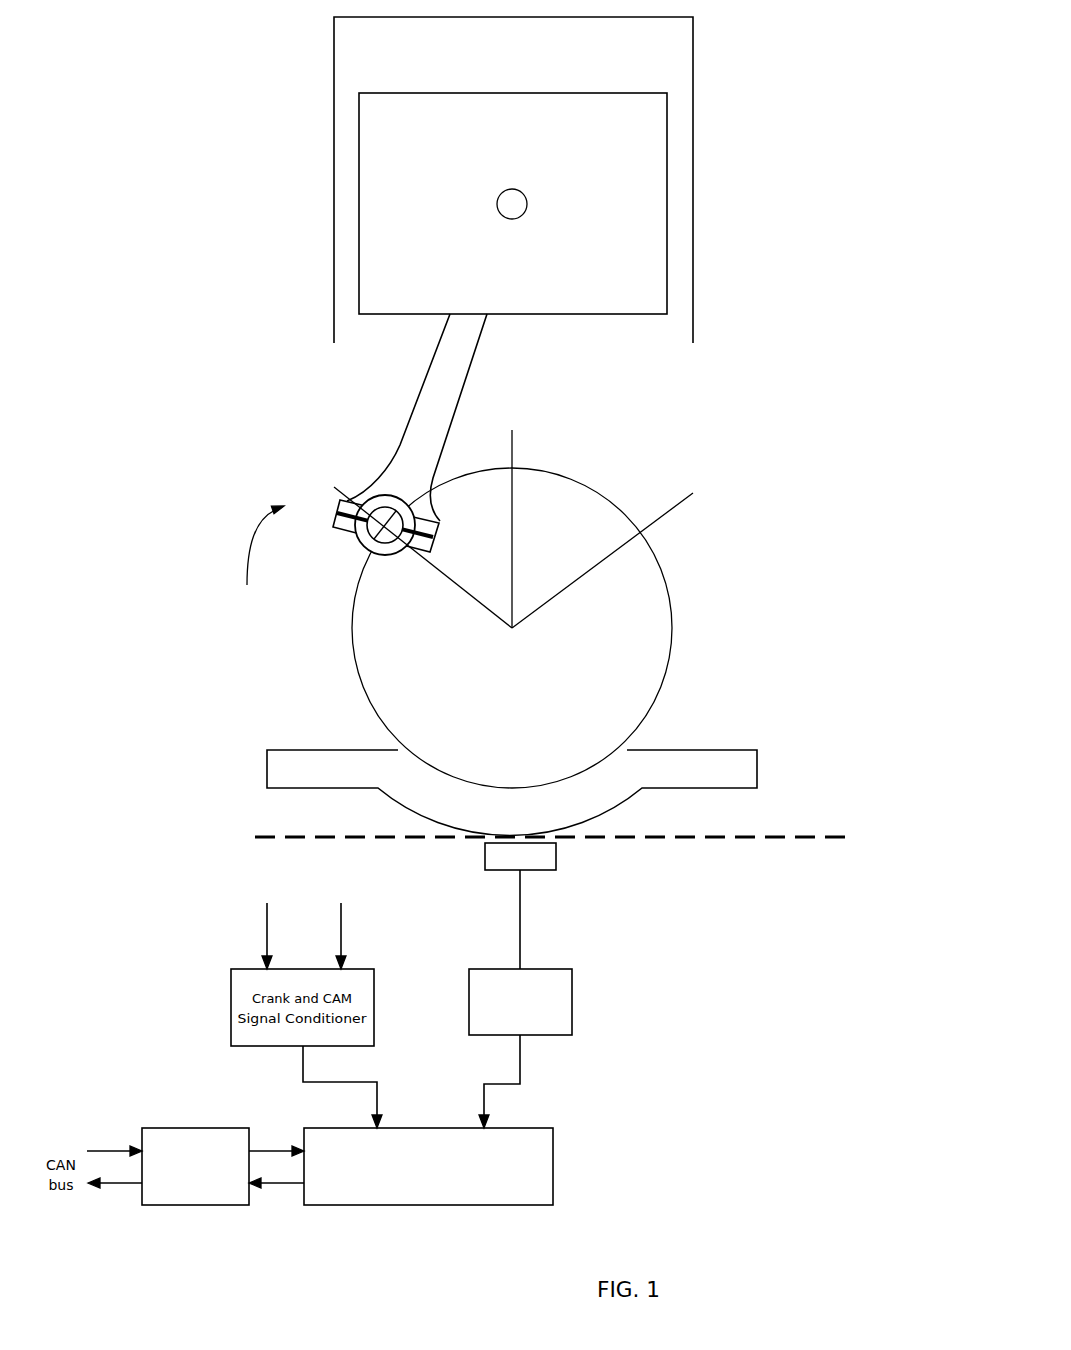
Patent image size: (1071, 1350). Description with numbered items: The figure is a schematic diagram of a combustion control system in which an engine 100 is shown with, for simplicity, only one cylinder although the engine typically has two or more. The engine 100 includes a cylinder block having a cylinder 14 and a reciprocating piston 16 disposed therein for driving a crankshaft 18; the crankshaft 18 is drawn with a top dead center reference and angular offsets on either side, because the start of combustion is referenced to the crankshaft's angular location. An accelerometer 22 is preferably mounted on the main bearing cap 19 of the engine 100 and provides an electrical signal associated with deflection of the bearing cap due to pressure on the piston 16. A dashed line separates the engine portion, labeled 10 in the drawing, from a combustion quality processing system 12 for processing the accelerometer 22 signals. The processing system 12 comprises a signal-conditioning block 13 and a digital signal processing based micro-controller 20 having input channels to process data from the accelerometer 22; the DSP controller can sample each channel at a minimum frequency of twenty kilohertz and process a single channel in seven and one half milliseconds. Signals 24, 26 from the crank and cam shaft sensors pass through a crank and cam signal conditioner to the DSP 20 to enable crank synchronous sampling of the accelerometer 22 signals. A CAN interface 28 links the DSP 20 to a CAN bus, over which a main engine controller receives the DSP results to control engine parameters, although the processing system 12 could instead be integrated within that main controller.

The engine 10 is at (912, 782).
The combustion quality processing system 12 is at (770, 897).
The signal-conditioning block 13 is at (494, 991).
The cylinder 14 is at (693, 128).
The reciprocating piston 16 is at (667, 250).
The crankshaft 18 is at (662, 567).
The main bearing cap 19 is at (757, 750).
The digital signal processing (DSP) based micro-controller 20 is at (512, 1191).
The accelerometer 22 is at (567, 894).
The crank shaft sensor signal 24 is at (277, 894).
The cam shaft sensor signal 26 is at (332, 894).
The CAN interface 28 is at (186, 1186).
The engine 100 is at (765, 668).